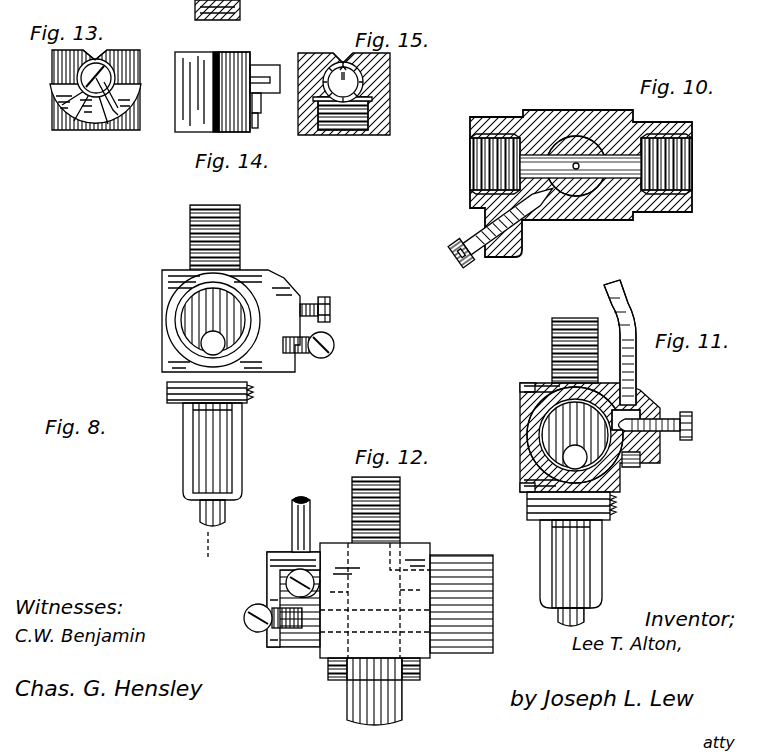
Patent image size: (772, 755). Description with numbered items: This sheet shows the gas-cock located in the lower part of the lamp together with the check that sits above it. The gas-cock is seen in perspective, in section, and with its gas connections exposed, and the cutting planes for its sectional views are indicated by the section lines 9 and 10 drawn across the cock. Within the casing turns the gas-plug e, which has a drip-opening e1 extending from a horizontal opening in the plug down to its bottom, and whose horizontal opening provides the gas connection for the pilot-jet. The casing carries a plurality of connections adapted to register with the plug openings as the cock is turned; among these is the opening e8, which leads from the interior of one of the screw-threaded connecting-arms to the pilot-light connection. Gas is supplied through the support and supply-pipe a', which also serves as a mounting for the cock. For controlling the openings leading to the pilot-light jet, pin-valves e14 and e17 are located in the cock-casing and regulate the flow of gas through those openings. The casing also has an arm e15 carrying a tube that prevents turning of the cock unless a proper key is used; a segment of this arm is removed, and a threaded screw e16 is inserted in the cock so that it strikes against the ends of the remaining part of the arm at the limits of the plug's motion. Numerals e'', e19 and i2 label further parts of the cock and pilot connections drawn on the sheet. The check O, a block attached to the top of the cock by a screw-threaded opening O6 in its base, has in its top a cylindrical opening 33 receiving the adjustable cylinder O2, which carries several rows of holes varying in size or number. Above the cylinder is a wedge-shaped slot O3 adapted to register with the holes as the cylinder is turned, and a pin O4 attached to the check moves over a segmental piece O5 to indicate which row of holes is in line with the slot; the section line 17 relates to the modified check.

In FIG. 13, the check O is at (141, 56).
In FIG. 14, the check O is at (192, 52).
In FIG. 15, the check O is at (390, 128).
In FIG. 13, the adjustable cylinder O2 is at (88, 76).
In FIG. 14, the adjustable cylinder O2 is at (279, 66).
In FIG. 15, the adjustable cylinder O2 is at (344, 82).
In FIG. 13, the wedge-shaped slot O3 is at (100, 54).
In FIG. 15, the wedge-shaped slot O3 is at (340, 58).
In FIG. 13, the pin O4 is at (110, 125).
In FIG. 14, the pin O4 is at (261, 104).
In FIG. 13, the segmental piece O5 is at (60, 100).
In FIG. 14, the segmental piece O5 is at (258, 121).
In FIG. 13, the screw-threaded opening O6 is at (98, 118).
In FIG. 15, the screw-threaded opening O6 is at (342, 130).
In FIG. 15, the cylindrical opening 33 is at (333, 70).
In FIG. 10, the supply-pipe a' is at (564, 183).
In FIG. 10, the gas-plug e is at (576, 192).
In FIG. 10, the ball seat channel e'' is at (580, 201).
In FIG. 10, the pin-valve e17 is at (492, 223).
In FIG. 8, the pin-valve e17 is at (321, 358).
In FIG. 12, the pin-valve e17 is at (244, 618).
In FIG. 8, the pin-valve e14 is at (315, 301).
In FIG. 12, the pin-valve e14 is at (286, 590).
In FIG. 11, the pin-valve e14 is at (693, 426).
In FIG. 8, the arm e15 is at (254, 400).
In FIG. 12, the arm e15 is at (420, 676).
In FIG. 11, the arm e15 is at (612, 507).
In FIG. 8, the opening e8 is at (220, 340).
In FIG. 11, the opening e8 is at (575, 435).
In FIG. 11, the drip-opening e1 is at (582, 454).
In FIG. 11, the plug e19 is at (640, 465).
In FIG. 12, the tube i2 is at (292, 548).
In FIG. 11, the tube i2 is at (636, 372).
In FIG. 12, the threaded screw e16 is at (338, 680).
In FIG. 8, the section line 9 is at (260, 318).
In FIG. 8, the section line 10 is at (250, 343).
In FIG. 8, the section line 17 is at (150, 184).